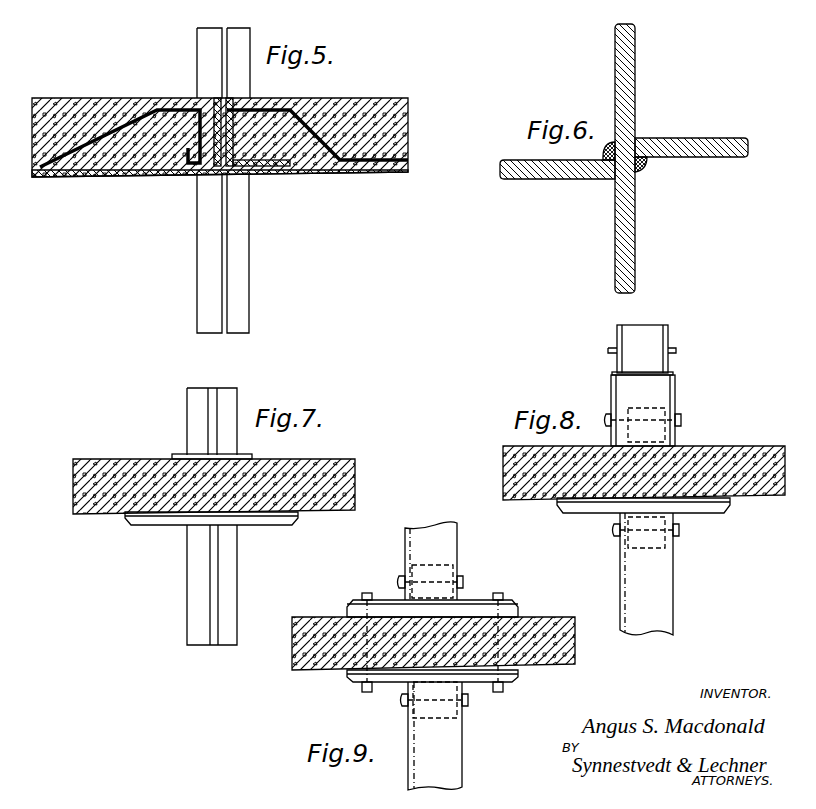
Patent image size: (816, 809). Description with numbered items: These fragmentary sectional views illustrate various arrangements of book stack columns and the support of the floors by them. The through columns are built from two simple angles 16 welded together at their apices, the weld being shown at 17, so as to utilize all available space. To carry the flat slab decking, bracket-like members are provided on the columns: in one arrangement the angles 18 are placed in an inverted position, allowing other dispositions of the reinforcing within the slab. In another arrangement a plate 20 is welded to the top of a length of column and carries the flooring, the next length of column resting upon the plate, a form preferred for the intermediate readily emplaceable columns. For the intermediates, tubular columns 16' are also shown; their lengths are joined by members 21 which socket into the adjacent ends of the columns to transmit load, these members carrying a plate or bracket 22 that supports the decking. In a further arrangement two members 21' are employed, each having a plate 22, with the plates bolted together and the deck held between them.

In FIG. 6, the angle 16 is at (624, 158).
In FIG. 7, the angle 16 is at (200, 516).
In FIG. 9, the angle 16 is at (452, 656).
In FIG. 8, the tubular column 16' is at (666, 480).
In FIG. 6, the weld 17 is at (646, 166).
In FIG. 5, the angle 18 is at (266, 175).
In FIG. 7, the plate 20 is at (176, 525).
In FIG. 8, the member 21 is at (660, 478).
In FIG. 9, the member 21' is at (455, 640).
In FIG. 8, the plate or bracket 22 is at (730, 500).
In FIG. 9, the plate or bracket 22 is at (518, 672).